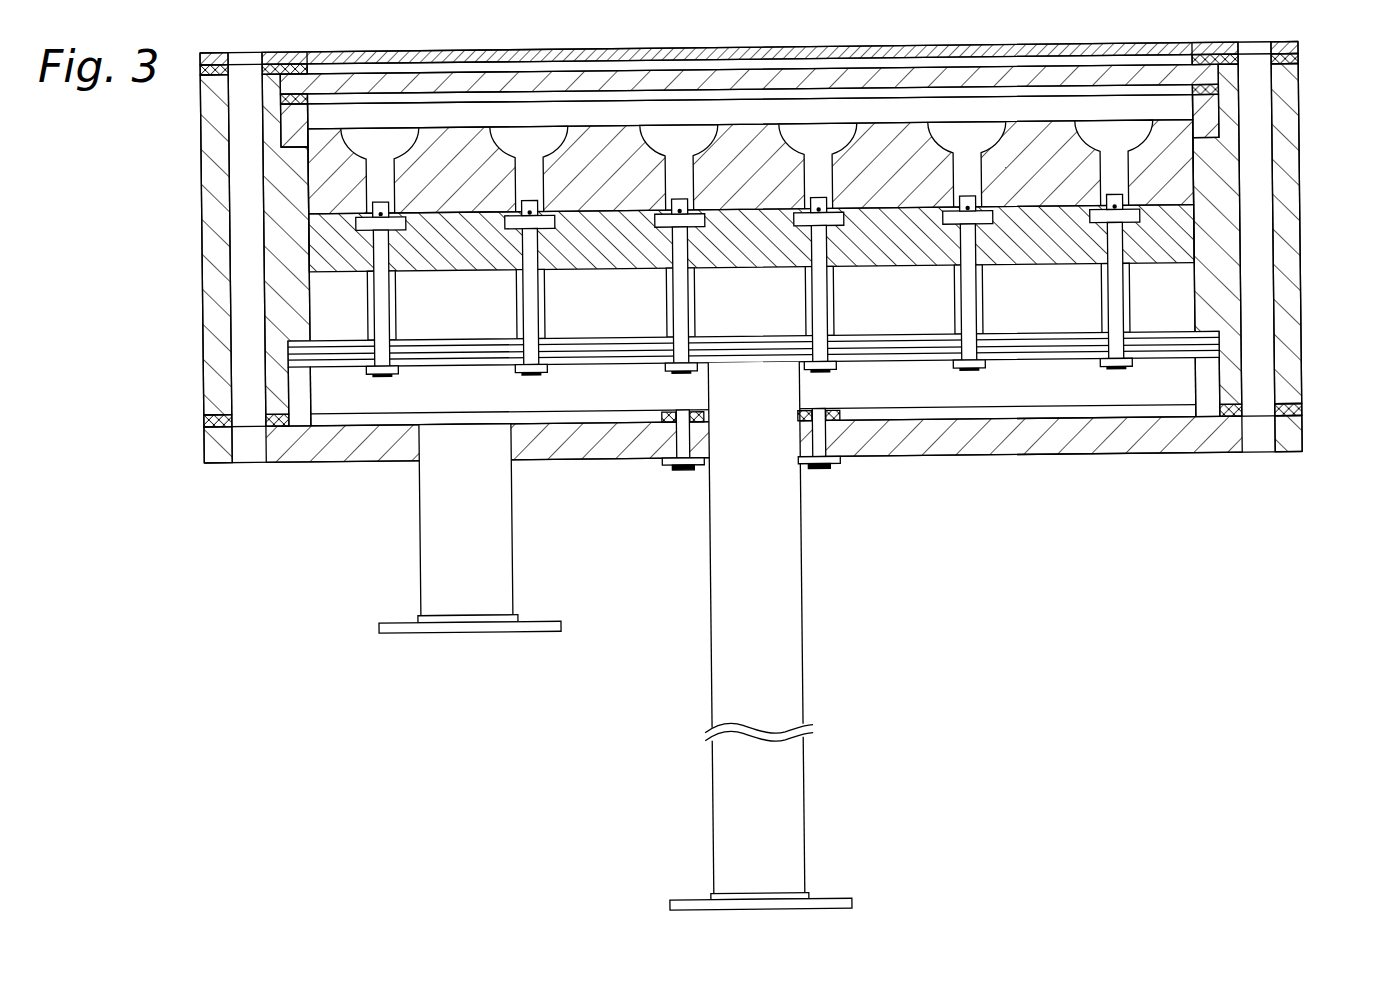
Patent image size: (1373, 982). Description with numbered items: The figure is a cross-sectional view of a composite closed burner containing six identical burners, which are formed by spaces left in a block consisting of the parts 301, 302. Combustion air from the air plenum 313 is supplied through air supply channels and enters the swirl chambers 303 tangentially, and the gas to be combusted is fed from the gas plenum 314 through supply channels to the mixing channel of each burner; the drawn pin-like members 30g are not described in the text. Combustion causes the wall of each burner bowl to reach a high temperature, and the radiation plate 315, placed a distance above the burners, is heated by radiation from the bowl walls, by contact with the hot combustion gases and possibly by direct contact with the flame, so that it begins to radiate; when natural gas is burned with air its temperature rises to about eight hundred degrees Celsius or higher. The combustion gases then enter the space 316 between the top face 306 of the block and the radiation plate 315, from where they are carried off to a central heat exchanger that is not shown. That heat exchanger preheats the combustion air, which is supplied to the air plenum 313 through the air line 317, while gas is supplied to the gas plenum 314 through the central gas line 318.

The block part 301 is at (915, 183).
The block part 302 is at (915, 248).
The swirl chamber 303 is at (1122, 219).
The pin guide 30g is at (1122, 241).
The top face 306 is at (1195, 112).
The air plenum 313 is at (915, 315).
The gas plenum 314 is at (917, 390).
The radiation plate 315 is at (1192, 75).
The space 316 is at (913, 120).
The air line 317 is at (805, 628).
The central gas line 318 is at (512, 537).